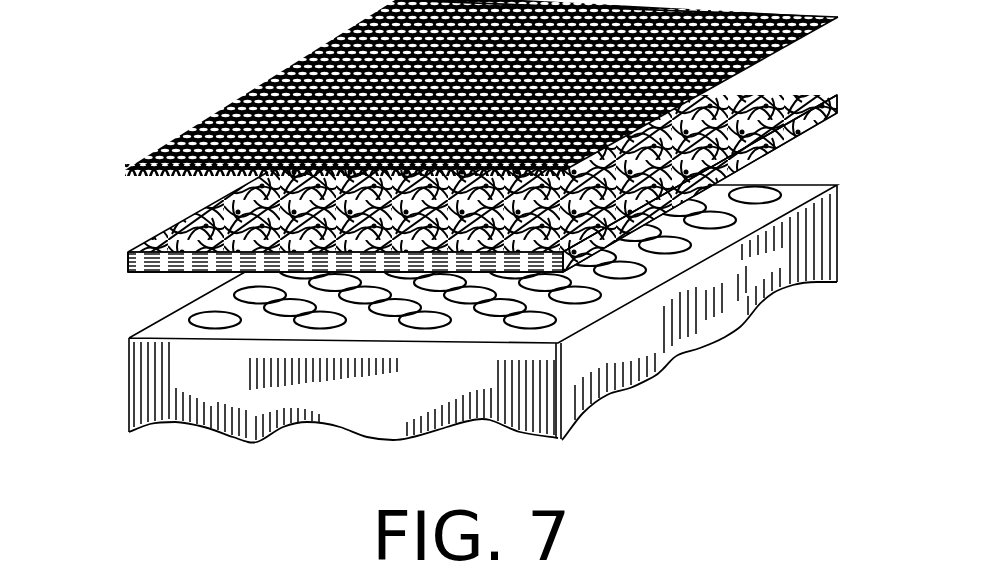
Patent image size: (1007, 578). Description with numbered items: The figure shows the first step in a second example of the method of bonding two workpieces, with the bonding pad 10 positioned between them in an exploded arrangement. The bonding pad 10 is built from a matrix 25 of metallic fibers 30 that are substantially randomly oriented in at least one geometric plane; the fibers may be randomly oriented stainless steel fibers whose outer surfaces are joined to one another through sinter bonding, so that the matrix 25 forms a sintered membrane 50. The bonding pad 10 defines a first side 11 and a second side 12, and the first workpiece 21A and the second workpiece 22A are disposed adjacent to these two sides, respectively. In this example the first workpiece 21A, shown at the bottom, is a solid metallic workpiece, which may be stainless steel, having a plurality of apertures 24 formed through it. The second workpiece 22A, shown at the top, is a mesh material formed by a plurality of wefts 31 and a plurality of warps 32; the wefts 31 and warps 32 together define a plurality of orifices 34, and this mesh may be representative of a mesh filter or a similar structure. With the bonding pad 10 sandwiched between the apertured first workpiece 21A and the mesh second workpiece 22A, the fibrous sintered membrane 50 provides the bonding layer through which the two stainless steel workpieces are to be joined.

The bonding pad 10 is at (835, 104).
The first side 11 is at (807, 103).
The second side 12 is at (813, 132).
The first workpiece 21A is at (795, 258).
The second workpiece 22A is at (257, 92).
The apertures 24 is at (313, 322).
The matrix 25 is at (153, 247).
The metallic fibers 30 is at (130, 260).
The wefts 31 is at (210, 130).
The warps 32 is at (320, 53).
The orifices 34 is at (387, 18).
The sintered membrane 50 is at (148, 270).